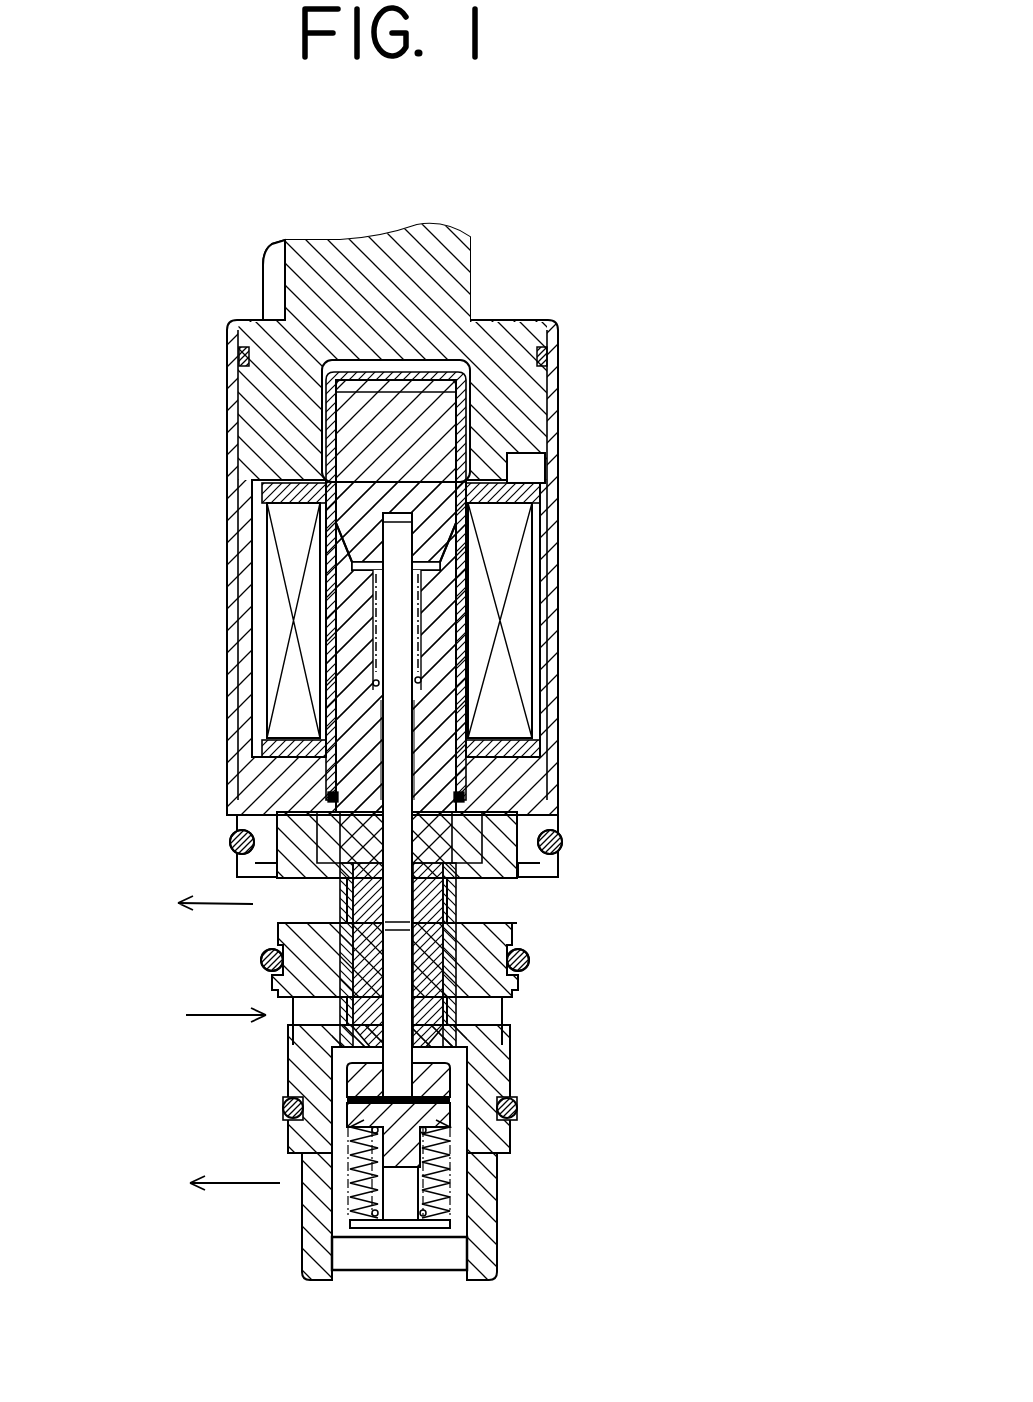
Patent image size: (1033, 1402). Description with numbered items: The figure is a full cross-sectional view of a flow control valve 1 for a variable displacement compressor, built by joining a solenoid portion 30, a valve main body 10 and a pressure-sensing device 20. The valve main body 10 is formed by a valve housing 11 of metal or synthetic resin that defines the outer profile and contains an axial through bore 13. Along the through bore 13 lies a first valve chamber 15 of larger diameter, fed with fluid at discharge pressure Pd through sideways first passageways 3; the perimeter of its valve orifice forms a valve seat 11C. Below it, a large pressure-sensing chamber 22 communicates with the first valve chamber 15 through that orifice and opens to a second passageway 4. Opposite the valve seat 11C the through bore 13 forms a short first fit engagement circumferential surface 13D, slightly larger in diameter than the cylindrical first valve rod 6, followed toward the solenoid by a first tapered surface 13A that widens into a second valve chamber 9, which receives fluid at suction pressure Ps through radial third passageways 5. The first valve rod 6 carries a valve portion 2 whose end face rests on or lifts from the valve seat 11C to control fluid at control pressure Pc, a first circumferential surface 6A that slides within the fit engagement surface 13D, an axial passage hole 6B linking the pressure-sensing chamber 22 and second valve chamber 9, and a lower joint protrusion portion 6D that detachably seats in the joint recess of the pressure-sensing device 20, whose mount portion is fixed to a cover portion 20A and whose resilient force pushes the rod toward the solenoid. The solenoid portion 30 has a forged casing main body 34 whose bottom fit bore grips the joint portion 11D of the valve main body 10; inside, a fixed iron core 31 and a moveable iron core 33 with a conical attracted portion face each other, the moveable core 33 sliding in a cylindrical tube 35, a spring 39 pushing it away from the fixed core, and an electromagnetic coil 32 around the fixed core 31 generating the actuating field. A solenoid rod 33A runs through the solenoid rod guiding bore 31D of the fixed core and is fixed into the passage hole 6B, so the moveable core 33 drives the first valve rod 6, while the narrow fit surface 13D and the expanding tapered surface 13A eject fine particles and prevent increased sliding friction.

The flow control valve 1 is at (610, 300).
The solenoid portion 30 is at (575, 425).
The casing main body 34 is at (553, 706).
The cylindrical tube 35 is at (387, 372).
The moveable iron core 33 is at (417, 420).
The solenoid rod 33A is at (400, 790).
The electromagnetic coil 32 is at (515, 620).
The spring 39 is at (345, 583).
The fixed iron core 31 is at (352, 658).
The solenoid rod guiding bore 31D is at (395, 728).
The through bore 13 is at (378, 850).
The first tapered surface 13A is at (375, 945).
The first fit engagement circumferential surface 13D is at (445, 893).
The valve main body 10 is at (542, 980).
The valve housing 11 is at (505, 1090).
The valve seat 11C is at (495, 985).
The joint portion 11D is at (510, 820).
The second valve chamber 9 is at (300, 897).
The third passageway 5 is at (455, 893).
The first valve chamber 15 is at (470, 1000).
The first passageway 3 is at (500, 1025).
The valve portion 2 is at (360, 1045).
The first valve rod 6 is at (490, 1060).
The first circumferential surface 6A is at (353, 1007).
The passage hole 6B is at (350, 1165).
The joint protrusion portion 6D is at (340, 1128).
The pressure-sensing device 20 is at (500, 1248).
The second passageway 4 is at (490, 1185).
The cover portion 20A is at (402, 1253).
The pressure-sensing chamber 22 is at (345, 1152).
The suction pressure Ps is at (189, 903).
The discharge pressure Pd is at (196, 1018).
The control pressure Pc is at (205, 1186).